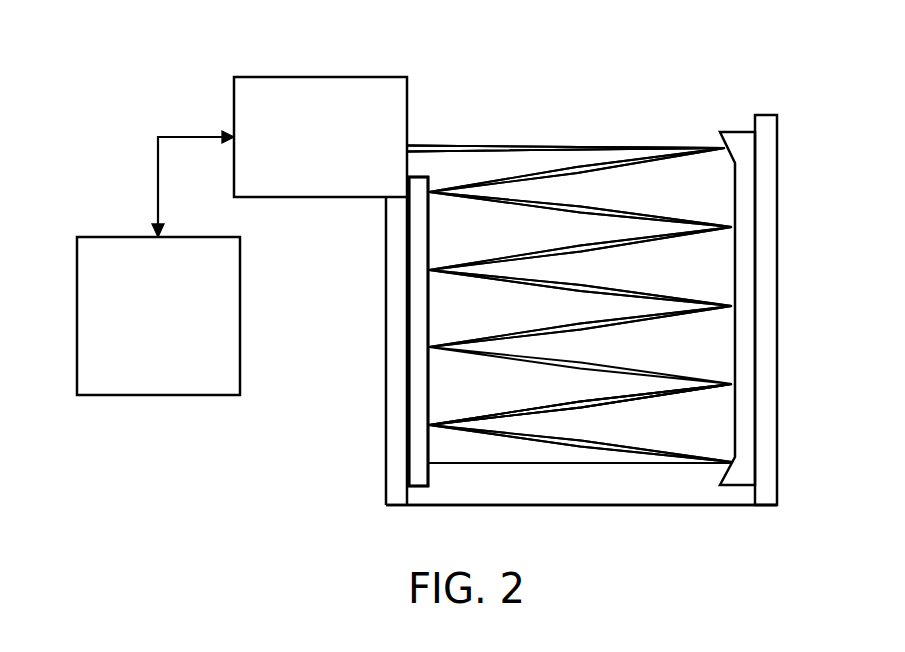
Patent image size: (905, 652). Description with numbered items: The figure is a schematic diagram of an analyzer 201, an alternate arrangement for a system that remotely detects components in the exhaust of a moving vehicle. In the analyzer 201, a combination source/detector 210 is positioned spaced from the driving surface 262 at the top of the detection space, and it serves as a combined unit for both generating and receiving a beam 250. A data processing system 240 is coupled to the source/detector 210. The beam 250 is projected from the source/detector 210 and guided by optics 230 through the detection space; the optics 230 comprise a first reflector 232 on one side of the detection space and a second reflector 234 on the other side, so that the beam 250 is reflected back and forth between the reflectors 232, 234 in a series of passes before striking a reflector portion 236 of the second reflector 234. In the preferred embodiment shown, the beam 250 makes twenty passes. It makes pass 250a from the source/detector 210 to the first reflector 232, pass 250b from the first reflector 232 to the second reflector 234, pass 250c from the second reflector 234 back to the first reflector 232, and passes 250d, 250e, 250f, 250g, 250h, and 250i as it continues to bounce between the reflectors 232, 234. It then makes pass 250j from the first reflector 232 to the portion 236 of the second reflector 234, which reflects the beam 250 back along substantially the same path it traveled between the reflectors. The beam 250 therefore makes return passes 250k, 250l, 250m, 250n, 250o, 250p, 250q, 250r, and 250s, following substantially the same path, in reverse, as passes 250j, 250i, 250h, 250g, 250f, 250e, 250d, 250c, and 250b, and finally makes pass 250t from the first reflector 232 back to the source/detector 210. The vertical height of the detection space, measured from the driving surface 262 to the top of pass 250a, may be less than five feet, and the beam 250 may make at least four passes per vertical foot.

The analyzer 201 is at (161, 137).
The combination source/detector 210 is at (320, 109).
The optics 230 is at (582, 283).
The first reflector 232 is at (616, 310).
The second reflector 234 is at (380, 331).
The reflector portion 236 is at (380, 331).
The data processing system 240 is at (158, 350).
The beam 250 is at (566, 121).
The pass 250a is at (566, 121).
The pass 250b is at (577, 153).
The pass 250c is at (580, 196).
The pass 250d is at (580, 235).
The pass 250e is at (580, 273).
The pass 250f is at (580, 317).
The pass 250g is at (580, 352).
The pass 250h is at (580, 395).
The pass 250i is at (580, 432).
The pass 250j is at (580, 448).
The pass 250k is at (580, 504).
The pass 250l is at (580, 464).
The pass 250m is at (580, 408).
The pass 250n is at (580, 395).
The pass 250o is at (580, 332).
The pass 250p is at (580, 294).
The pass 250q is at (580, 255).
The pass 250r is at (580, 220).
The pass 250s is at (577, 175).
The pass 250t is at (566, 200).
The driving surface 262 is at (581, 538).